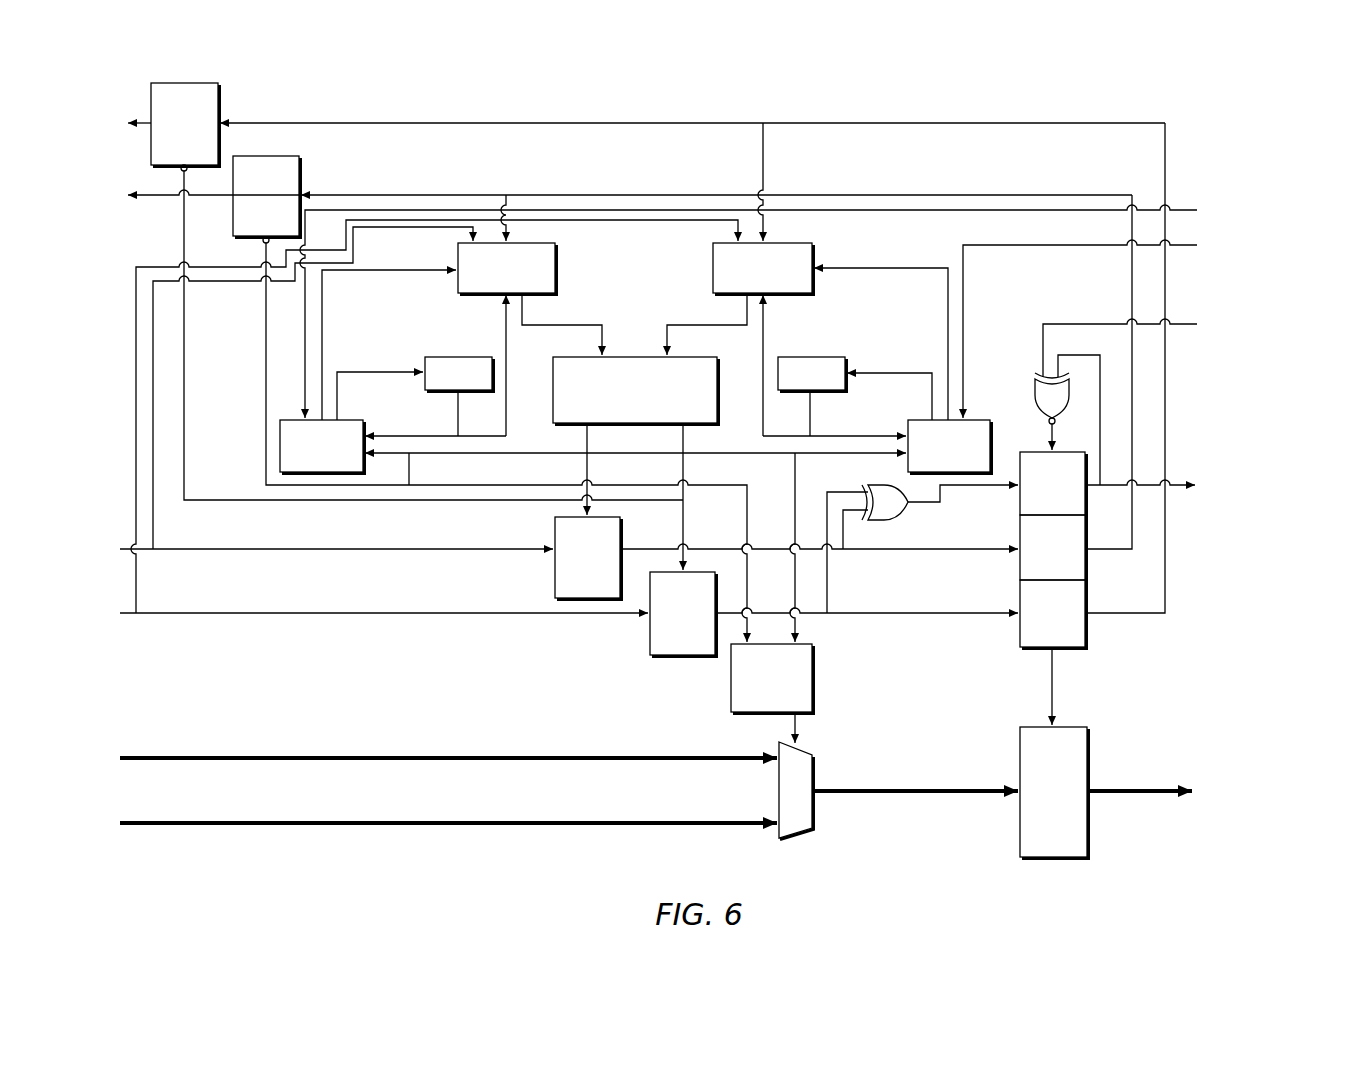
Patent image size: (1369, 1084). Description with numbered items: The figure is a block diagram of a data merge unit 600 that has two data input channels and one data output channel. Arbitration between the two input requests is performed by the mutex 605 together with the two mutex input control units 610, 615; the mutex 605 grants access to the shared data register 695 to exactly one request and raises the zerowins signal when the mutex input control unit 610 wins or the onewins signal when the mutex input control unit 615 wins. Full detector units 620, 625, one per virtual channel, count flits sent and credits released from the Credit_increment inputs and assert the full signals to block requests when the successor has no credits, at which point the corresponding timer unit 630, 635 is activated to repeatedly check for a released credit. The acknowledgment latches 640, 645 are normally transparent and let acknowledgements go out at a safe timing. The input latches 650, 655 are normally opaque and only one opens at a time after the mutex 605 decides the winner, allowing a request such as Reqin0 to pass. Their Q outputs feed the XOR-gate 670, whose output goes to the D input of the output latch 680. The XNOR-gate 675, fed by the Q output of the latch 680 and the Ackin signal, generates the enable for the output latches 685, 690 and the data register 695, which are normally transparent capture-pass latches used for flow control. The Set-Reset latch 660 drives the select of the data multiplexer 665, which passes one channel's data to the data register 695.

The data merge unit 600 is at (1297, 128).
The mutex 605 is at (636, 391).
The mutex input control unit 610 is at (556, 268).
The mutex input control unit 615 is at (712, 268).
The full detector unit 620 is at (279, 440).
The full detector unit 625 is at (991, 450).
The timer unit 630 is at (458, 357).
The timer unit 635 is at (810, 357).
The acknowledgment latch 640 is at (219, 96).
The acknowledgment latch 645 is at (300, 168).
The input latch 650 is at (554, 530).
The input latch 655 is at (649, 637).
The Set-Reset latch 660 is at (813, 677).
The data multiplexer 665 is at (813, 775).
The XOR-gate 670 is at (899, 517).
The XNOR-gate 675 is at (1036, 392).
The output latch 680 is at (1019, 497).
The output latch 685 is at (1019, 561).
The output latch 690 is at (1019, 625).
The data register 695 is at (1088, 757).